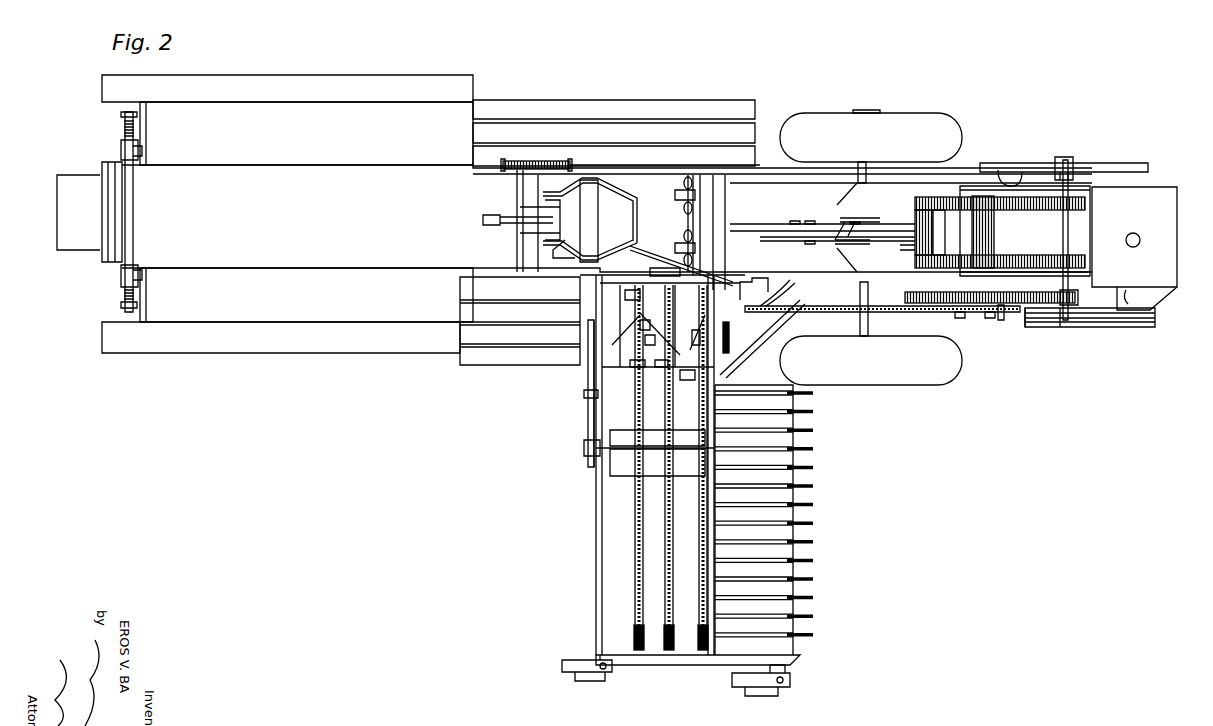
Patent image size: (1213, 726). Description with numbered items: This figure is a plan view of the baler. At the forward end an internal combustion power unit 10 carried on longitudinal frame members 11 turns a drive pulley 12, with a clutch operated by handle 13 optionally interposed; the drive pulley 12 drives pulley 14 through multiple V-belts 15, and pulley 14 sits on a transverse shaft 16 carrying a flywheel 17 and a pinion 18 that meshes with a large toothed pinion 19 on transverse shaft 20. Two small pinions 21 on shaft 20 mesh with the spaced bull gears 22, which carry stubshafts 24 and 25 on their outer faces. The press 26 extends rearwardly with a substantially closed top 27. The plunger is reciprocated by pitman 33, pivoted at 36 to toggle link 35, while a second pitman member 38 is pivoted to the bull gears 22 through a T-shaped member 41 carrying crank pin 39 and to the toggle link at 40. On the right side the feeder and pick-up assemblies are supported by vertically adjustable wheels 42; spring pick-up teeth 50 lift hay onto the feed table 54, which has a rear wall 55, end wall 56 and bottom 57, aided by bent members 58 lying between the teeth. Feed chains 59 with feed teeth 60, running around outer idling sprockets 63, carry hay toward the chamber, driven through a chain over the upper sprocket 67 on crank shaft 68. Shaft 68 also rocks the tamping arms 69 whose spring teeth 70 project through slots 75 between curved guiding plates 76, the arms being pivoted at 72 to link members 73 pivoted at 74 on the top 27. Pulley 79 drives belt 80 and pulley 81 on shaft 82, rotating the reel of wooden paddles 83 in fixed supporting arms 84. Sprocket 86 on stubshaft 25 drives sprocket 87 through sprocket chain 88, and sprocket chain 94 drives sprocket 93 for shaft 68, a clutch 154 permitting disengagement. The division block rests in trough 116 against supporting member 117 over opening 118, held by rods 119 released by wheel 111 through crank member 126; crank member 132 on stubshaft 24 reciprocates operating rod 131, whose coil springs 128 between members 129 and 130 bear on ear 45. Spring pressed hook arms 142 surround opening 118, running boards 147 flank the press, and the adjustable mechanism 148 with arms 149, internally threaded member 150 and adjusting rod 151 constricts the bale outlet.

The internal combustion power unit 10 is at (1177, 209).
The longitudinal frame members 11 is at (1088, 190).
The drive pulley 12 is at (1150, 328).
The clutch handle 13 is at (1150, 302).
The pulley 14 is at (1095, 328).
The multiple V-belts 15 is at (1113, 328).
The transverse shaft 16 is at (1063, 245).
The flywheel 17 is at (1118, 164).
The pinion 18 is at (1078, 297).
The large toothed pinion 19 is at (905, 298).
The transverse shaft 20 is at (985, 243).
The pinions 21 is at (995, 206).
The bull gears 22 is at (940, 255).
The stubshaft 24 is at (1055, 166).
The stubshaft 25 is at (1000, 318).
The press 26 is at (430, 158).
The top 27 is at (404, 214).
The pitman 33 is at (765, 224).
The toggle link 35 is at (812, 224).
The pivot 36 is at (800, 224).
The second pitman member 38 is at (853, 220).
The crank pin 39 is at (935, 208).
The pivot 40 is at (836, 242).
The T-shaped member 41 is at (915, 248).
The vertically adjustable wheels 42 is at (575, 672).
The ear 45 is at (545, 160).
The spring pick-up teeth 50 is at (815, 412).
The feed table 54 is at (622, 547).
The rear wall 55 is at (596, 573).
The end wall 56 is at (668, 666).
The bottom 57 is at (680, 602).
The bent members 58 is at (810, 555).
The feed chains 59 is at (665, 547).
The feed teeth 60 is at (700, 511).
The outer idling sprockets 63 is at (660, 622).
The upper sprocket 67 is at (738, 327).
The crank shaft 68 is at (698, 336).
The arms 69 is at (650, 325).
The spring teeth 70 is at (648, 302).
The pivot 72 is at (652, 340).
The link members 73 is at (681, 300).
The pivot 74 is at (672, 273).
The slots 75 is at (638, 366).
The curved sheet metal guiding plates 76 is at (665, 378).
The pulley 79 is at (599, 319).
The belt 80 is at (586, 395).
The pulley 81 is at (586, 446).
The shaft 82 is at (603, 450).
The reel of wooden paddles 83 is at (659, 467).
The fixed supporting arms 84 is at (594, 420).
The sprocket 86 is at (990, 318).
The sprocket 87 is at (755, 313).
The sprocket chain 88 is at (960, 318).
The sprocket 93 is at (780, 286).
The sprocket chain 94 is at (852, 307).
The wheel 111 is at (492, 224).
The trough 116 is at (597, 186).
The supporting member 117 is at (597, 252).
The opening 118 is at (598, 220).
The rods 119 is at (580, 216).
The crank member 126 is at (540, 194).
The coil springs 128 is at (530, 163).
The member 129 is at (503, 166).
The member 130 is at (575, 165).
The operating rod 131 is at (692, 170).
The crank member 132 is at (1008, 171).
The spring pressed hook arms 142 is at (570, 251).
The running boards 147 is at (370, 104).
The adjustable mechanism 148 is at (116, 131).
The arms 149 is at (140, 150).
The internally threaded member 150 is at (121, 150).
The adjusting rod 151 is at (121, 113).
The clutch 154 is at (750, 282).